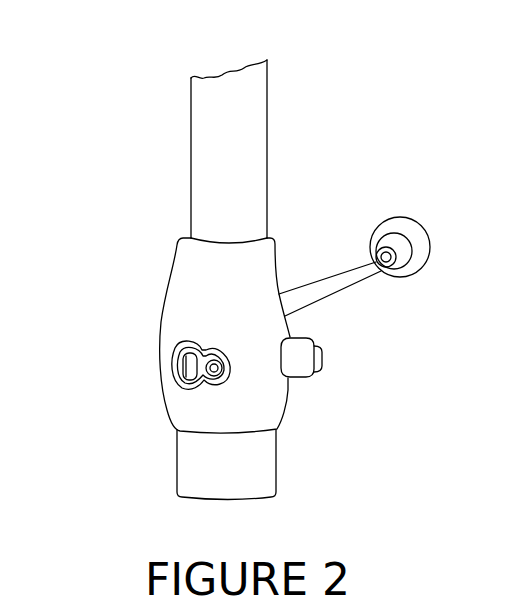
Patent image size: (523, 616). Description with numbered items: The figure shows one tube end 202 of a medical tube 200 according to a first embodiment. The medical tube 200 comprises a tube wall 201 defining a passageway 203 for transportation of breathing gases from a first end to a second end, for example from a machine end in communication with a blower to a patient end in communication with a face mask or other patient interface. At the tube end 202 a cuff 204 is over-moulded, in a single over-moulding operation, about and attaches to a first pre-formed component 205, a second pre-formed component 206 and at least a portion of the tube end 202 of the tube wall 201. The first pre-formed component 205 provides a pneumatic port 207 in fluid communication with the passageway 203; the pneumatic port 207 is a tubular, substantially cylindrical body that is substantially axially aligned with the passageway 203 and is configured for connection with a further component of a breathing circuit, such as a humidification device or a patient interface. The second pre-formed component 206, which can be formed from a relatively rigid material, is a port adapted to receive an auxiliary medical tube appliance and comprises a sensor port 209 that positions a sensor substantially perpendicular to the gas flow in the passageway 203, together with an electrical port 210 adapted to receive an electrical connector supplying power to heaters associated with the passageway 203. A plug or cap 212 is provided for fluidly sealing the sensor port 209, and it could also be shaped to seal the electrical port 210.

The medical tube 200 is at (383, 148).
The tube wall 201 is at (243, 134).
The tube end 202 is at (213, 335).
The passageway 203 is at (223, 58).
The cuff 204 is at (275, 395).
The first pre-formed component 205 is at (293, 465).
The pneumatic port 207 is at (260, 460).
The second pre-formed component 206 is at (343, 345).
The sensor port 209 is at (322, 358).
The electrical port 210 is at (165, 368).
The plug or cap 212 is at (413, 233).